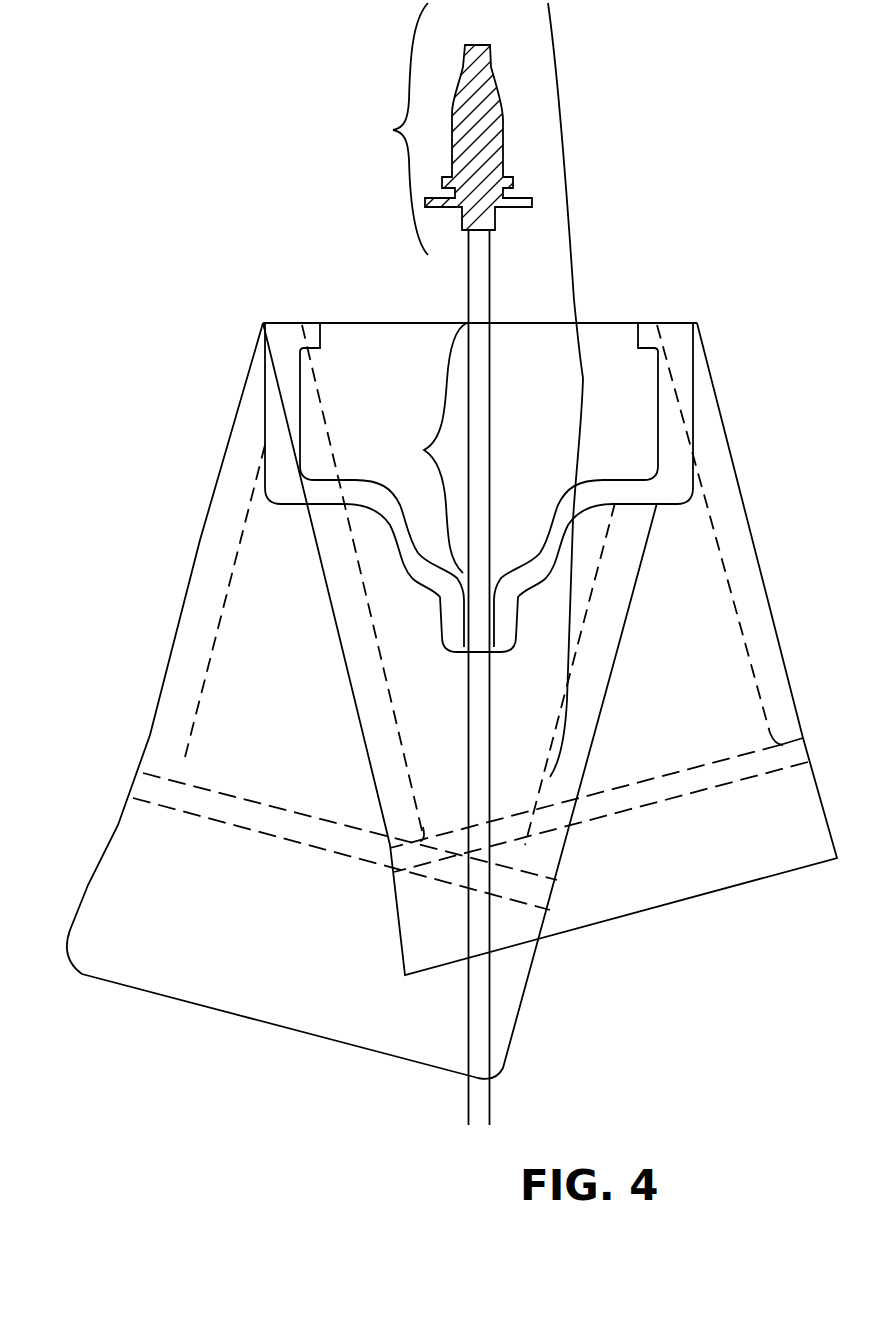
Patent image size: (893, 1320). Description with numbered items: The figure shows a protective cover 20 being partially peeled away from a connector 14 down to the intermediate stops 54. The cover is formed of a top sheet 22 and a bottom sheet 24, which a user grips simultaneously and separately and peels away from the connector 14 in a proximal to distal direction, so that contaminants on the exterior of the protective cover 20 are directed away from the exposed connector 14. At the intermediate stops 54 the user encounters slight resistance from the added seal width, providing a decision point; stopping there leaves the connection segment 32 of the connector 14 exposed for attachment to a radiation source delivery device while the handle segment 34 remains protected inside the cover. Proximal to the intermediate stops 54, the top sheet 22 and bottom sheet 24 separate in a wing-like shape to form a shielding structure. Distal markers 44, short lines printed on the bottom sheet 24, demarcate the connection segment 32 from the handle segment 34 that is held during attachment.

The connector 14 is at (583, 378).
The protective cover 20 is at (100, 328).
The top sheet 22 is at (710, 870).
The bottom sheet 24 is at (208, 968).
The connection segment 32 is at (393, 130).
The handle segment 34 is at (424, 450).
The distal markers 44 is at (336, 322).
The intermediate stops 54 is at (309, 333).